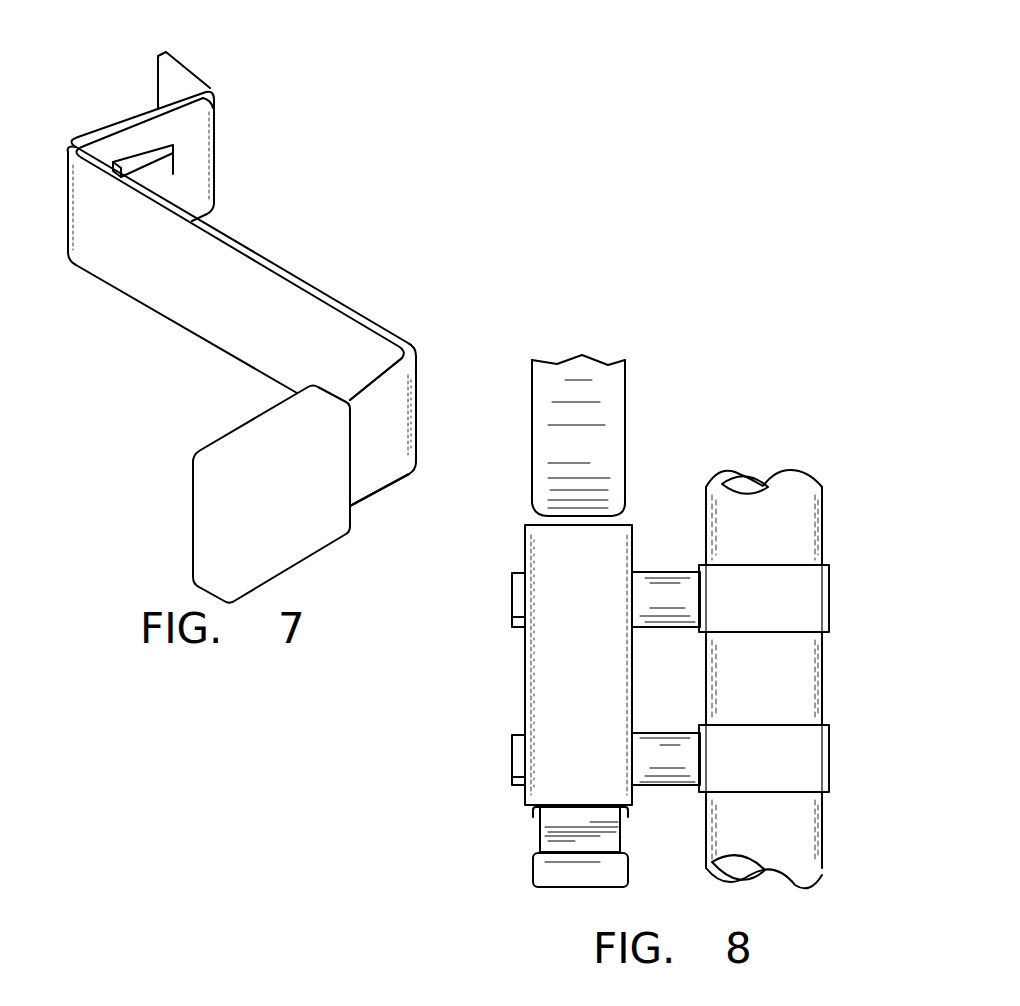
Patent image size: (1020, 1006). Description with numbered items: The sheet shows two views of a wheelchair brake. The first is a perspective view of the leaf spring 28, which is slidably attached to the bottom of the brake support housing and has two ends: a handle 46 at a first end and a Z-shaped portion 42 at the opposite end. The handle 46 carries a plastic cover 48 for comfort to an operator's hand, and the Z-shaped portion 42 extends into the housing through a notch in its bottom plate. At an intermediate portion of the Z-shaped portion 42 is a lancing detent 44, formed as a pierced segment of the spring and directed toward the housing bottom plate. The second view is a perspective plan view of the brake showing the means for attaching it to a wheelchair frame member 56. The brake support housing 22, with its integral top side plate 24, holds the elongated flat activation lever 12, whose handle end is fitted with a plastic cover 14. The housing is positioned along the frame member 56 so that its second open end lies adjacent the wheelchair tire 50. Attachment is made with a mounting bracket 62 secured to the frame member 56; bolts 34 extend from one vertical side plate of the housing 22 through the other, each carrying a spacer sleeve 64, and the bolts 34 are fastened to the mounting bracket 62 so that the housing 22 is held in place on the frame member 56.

In FIG. 8, the activation lever 12 is at (540, 825).
In FIG. 8, the plastic cover 14 is at (533, 870).
In FIG. 8, the brake support housing 22 is at (525, 648).
In FIG. 8, the top side plate 24 is at (567, 710).
In FIG. 7, the leaf spring 28 is at (267, 261).
In FIG. 8, the bolt 34 is at (512, 598).
In FIG. 7, the Z-shaped portion 42 is at (108, 123).
In FIG. 7, the lancing detent 44 is at (162, 174).
In FIG. 7, the leaf spring handle 46 is at (377, 414).
In FIG. 7, the plastic cover 48 is at (314, 519).
In FIG. 8, the wheelchair tire 50 is at (626, 387).
In FIG. 8, the frame member 56 is at (806, 671).
In FIG. 8, the mounting bracket 62 is at (813, 588).
In FIG. 8, the spacer sleeve 64 is at (672, 571).